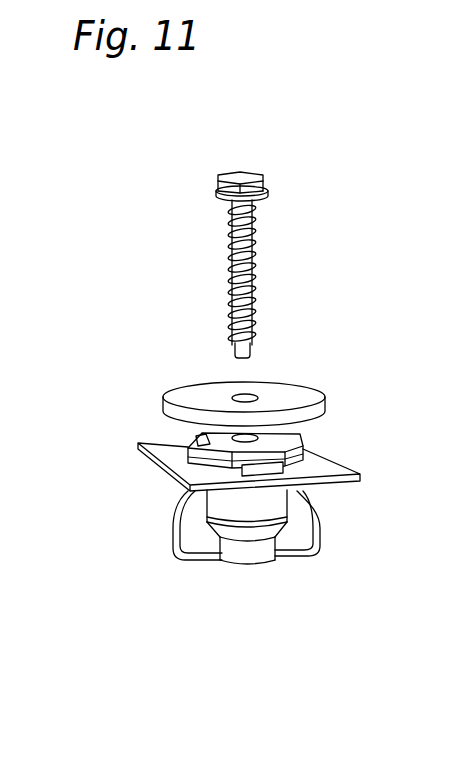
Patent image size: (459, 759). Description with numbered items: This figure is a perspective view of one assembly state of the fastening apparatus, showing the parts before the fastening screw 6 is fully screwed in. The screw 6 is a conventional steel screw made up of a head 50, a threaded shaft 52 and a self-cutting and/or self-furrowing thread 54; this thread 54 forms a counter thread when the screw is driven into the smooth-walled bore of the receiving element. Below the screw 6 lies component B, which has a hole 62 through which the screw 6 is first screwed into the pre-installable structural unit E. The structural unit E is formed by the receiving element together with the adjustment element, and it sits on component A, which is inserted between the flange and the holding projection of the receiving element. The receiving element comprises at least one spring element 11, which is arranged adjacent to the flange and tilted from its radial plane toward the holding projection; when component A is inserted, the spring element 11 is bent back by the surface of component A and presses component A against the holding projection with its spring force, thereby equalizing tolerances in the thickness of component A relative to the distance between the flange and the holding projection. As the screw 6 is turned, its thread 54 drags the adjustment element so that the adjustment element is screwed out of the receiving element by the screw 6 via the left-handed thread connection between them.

The fastening screw 6 is at (194, 224).
The head 50 is at (243, 172).
The thread 54 is at (258, 255).
The threaded shaft 52 is at (256, 350).
The hole 62 is at (240, 395).
The component B is at (320, 392).
The pre-installable structural unit E is at (113, 440).
The component A is at (355, 482).
The spring element 11 is at (192, 490).